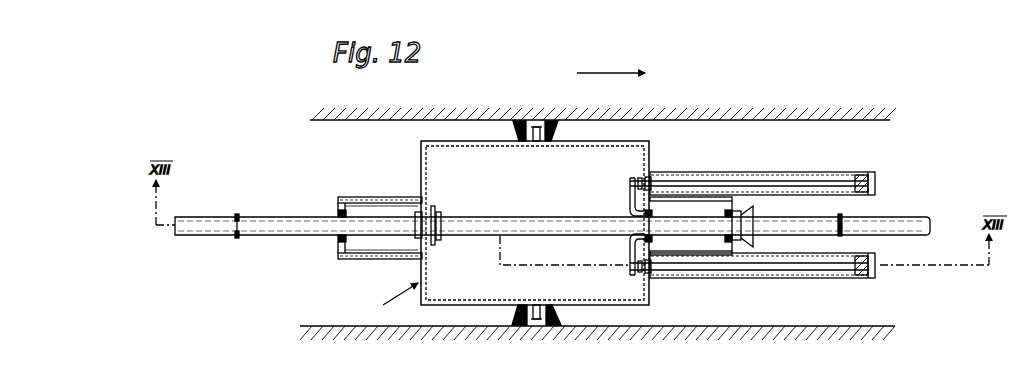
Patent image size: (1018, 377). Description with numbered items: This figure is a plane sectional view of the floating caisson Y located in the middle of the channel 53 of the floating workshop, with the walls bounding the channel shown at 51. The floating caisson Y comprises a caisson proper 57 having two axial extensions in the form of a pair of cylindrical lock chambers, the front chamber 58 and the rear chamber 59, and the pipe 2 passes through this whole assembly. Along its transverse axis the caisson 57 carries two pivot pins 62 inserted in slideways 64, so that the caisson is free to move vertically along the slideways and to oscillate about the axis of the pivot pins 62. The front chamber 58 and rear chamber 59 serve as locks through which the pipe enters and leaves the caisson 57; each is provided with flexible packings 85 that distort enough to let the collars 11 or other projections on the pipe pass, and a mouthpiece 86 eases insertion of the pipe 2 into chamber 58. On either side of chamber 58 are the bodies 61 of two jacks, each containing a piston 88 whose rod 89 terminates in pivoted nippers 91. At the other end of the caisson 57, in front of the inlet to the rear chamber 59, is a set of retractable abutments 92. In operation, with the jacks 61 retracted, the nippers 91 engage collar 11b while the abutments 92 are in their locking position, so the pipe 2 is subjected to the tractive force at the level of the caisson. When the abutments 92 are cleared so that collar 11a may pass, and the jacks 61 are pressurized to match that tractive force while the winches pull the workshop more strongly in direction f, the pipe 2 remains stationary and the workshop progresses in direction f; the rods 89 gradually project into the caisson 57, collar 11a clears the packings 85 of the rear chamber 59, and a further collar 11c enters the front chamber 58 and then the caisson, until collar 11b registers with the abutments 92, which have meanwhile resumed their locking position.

The pipe 2 is at (301, 237).
The collar 11 is at (237, 214).
The collar 11a is at (444, 217).
The collar 11b is at (609, 217).
The collar 11c is at (845, 218).
The wall 51 is at (678, 120).
The channel 53 is at (735, 137).
The caisson proper 57 is at (468, 288).
The front lock chamber 58 is at (698, 249).
The rear lock chamber 59 is at (379, 210).
The jack body 61 is at (840, 172).
The pivot pin 62 is at (546, 123).
The slideway 64 is at (520, 127).
The flexible packing 85 is at (336, 211).
The mouthpiece 86 is at (755, 239).
The piston 88 is at (870, 173).
The rod 89 is at (772, 181).
The pivoted nippers 91 is at (628, 197).
The retractable abutments 92 is at (435, 210).
The floating caisson Y is at (393, 299).
The direction f is at (611, 60).